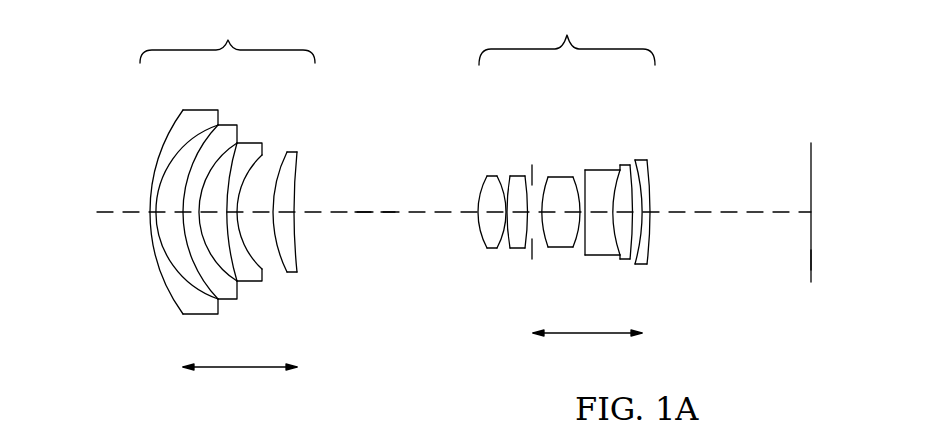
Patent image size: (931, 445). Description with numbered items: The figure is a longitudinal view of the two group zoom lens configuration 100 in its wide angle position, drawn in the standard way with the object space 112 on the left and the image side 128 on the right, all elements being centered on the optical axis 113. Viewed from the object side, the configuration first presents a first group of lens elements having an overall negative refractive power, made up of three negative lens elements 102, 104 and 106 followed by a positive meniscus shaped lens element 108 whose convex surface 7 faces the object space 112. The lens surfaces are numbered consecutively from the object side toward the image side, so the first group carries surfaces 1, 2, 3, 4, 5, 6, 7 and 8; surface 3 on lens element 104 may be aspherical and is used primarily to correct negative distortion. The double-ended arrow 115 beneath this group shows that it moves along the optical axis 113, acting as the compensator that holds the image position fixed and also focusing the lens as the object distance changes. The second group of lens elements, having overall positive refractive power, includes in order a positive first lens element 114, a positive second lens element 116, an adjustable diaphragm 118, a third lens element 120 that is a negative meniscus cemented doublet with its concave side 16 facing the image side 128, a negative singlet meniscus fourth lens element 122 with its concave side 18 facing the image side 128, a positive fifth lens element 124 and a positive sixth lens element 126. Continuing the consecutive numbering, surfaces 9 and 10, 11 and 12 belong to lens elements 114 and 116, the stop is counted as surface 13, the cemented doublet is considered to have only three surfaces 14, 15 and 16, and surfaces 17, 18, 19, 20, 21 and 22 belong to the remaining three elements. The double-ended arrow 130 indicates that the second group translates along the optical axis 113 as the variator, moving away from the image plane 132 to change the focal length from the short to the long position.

The two group zoom lens configuration 100 is at (47, 63).
The lens element 102 is at (200, 109).
The lens element 104 is at (226, 124).
The lens element 106 is at (255, 142).
The meniscus shaped lens element 108 is at (293, 152).
The object space 112 is at (57, 230).
The optical axis 113 is at (373, 214).
The first lens element 114 is at (492, 175).
The double-ended arrow 115 is at (240, 380).
The second lens element 116 is at (520, 175).
The adjustable diaphragm 118 is at (540, 207).
The third lens element 120 is at (563, 176).
The fourth lens element 122 is at (603, 169).
The fifth lens element 124 is at (623, 164).
The sixth lens element 126 is at (672, 209).
The image side 128 is at (862, 196).
The double-ended arrow 130 is at (587, 346).
The image plane 132 is at (810, 258).
The lens surface 1 is at (155, 247).
The lens surface 2 is at (178, 263).
The aspherical surface 3 is at (193, 262).
The lens surface 4 is at (219, 247).
The lens surface 5 is at (225, 267).
The lens surface 6 is at (260, 258).
The convex surface 7 is at (282, 261).
The lens surface 8 is at (300, 262).
The lens surface 9 is at (478, 218).
The lens surface 10 is at (500, 232).
The lens surface 11 is at (507, 236).
The lens surface 12 is at (518, 241).
The aperture stop surface 13 is at (531, 260).
The lens surface 14 is at (543, 237).
The lens surface 15 is at (577, 243).
The concave side 16 is at (581, 241).
The lens surface 17 is at (592, 256).
The concave side 18 is at (620, 252).
The lens surface 19 is at (633, 258).
The lens surface 20 is at (642, 254).
The lens surface 21 is at (650, 246).
The lens surface 22 is at (651, 223).